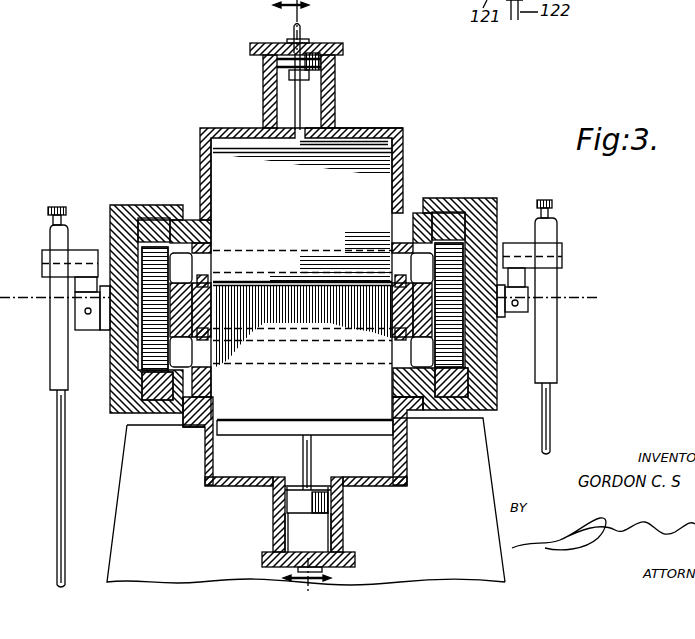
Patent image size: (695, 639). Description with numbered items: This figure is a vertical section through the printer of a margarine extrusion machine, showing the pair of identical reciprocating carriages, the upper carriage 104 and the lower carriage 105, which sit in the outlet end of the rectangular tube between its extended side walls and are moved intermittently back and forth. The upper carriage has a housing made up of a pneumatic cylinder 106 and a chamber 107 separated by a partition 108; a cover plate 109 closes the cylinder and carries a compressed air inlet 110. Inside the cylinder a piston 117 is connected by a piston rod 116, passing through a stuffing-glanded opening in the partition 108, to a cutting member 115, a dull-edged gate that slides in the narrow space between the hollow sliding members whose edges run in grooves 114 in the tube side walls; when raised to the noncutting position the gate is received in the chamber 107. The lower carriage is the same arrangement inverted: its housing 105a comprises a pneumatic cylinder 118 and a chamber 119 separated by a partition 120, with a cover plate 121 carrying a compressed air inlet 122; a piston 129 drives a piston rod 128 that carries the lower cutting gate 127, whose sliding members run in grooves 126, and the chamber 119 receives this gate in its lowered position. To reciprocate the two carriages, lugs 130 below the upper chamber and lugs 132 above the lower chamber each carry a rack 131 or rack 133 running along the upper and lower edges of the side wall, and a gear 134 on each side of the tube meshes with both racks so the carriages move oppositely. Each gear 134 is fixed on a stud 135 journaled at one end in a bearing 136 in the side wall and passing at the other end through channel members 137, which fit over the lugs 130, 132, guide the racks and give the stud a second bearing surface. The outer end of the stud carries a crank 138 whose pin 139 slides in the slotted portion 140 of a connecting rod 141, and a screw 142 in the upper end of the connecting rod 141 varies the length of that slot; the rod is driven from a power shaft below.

The upper reciprocating carriage 104 is at (313, 332).
The lower reciprocating carriage 105 is at (313, 491).
The lower housing 105a is at (274, 535).
The pneumatic cylinder 106 is at (336, 80).
The chamber 107 is at (404, 150).
The partition 108 is at (376, 128).
The cover plate 109 is at (262, 43).
The compressed air inlet 110 is at (302, 27).
The grooves 114 is at (205, 280).
The cutting member 115 is at (233, 170).
The piston rod 116 is at (301, 100).
The piston 117 is at (290, 62).
The pneumatic cylinder 118 is at (344, 531).
The chamber 119 is at (395, 470).
The partition 120 is at (220, 486).
The cover plate 121 is at (263, 565).
The compressed air inlet 122 is at (306, 552).
The grooves 126 is at (228, 355).
The cutting gate 127 is at (270, 410).
The piston rod 128 is at (312, 452).
The piston 129 is at (290, 505).
The lugs 130 is at (186, 222).
The rack 131 is at (150, 218).
The lugs 132 is at (190, 415).
The rack 133 is at (158, 400).
The gear 134 is at (148, 352).
The stud 135 is at (74, 312).
The bearing 136 is at (218, 287).
The channel members 137 is at (112, 215).
The crank 138 is at (78, 284).
The pin 139 is at (44, 264).
The slotted portion 140 is at (58, 357).
The connecting rod 141 is at (60, 478).
The screw 142 is at (55, 207).